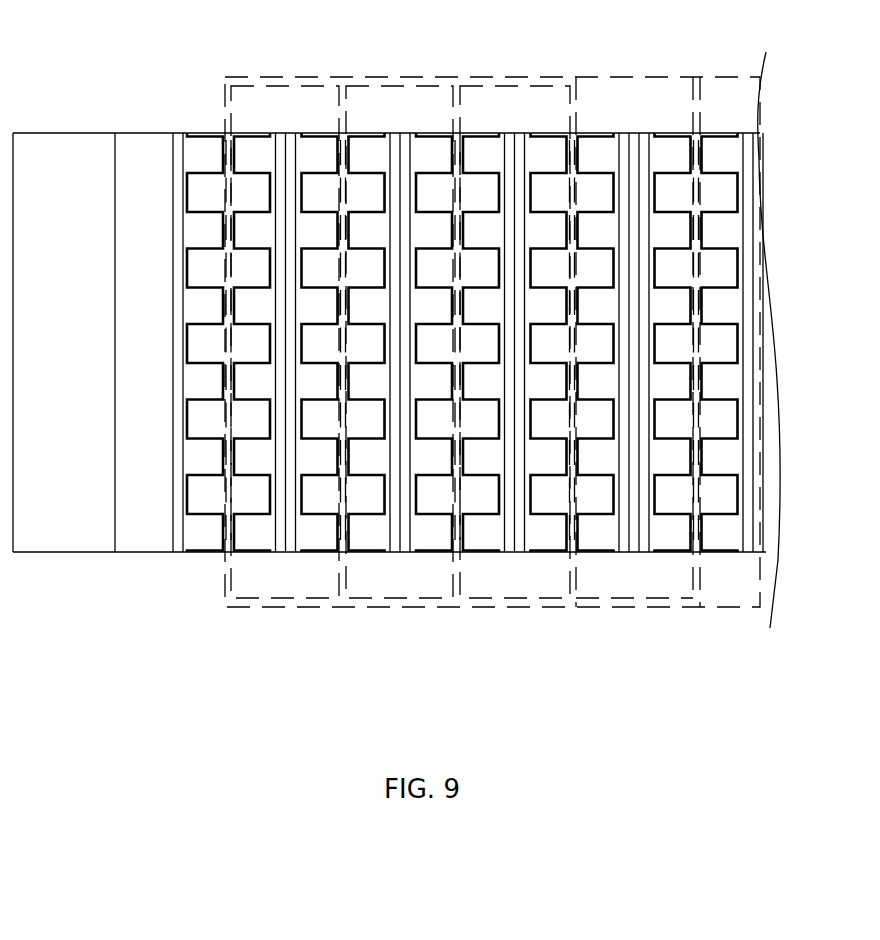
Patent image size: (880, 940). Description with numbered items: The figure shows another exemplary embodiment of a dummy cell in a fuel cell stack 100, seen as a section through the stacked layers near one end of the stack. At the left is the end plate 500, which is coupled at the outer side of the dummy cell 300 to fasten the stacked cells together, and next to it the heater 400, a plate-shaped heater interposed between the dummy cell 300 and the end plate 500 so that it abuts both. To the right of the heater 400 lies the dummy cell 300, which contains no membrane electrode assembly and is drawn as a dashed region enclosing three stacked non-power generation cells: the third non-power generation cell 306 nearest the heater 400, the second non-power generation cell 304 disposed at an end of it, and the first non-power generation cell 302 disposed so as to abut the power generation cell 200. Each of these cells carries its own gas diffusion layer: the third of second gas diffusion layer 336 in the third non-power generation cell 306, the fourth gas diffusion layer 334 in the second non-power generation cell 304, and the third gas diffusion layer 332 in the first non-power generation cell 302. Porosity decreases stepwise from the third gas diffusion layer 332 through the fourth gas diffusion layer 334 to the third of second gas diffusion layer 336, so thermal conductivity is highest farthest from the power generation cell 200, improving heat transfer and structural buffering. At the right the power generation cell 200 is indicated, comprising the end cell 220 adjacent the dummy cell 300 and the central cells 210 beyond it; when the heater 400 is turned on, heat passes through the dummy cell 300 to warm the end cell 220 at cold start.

The fuel cell stack 100 is at (78, 34).
The end plate 500 is at (70, 133).
The heater 400 is at (147, 133).
The dummy cell 300 is at (260, 608).
The third non-power generation cell 306 is at (305, 598).
The second non-power generation cell 304 is at (418, 598).
The first non-power generation cell 302 is at (530, 598).
The third of second gas diffusion layer 336 is at (290, 137).
The fourth gas diffusion layer 334 is at (405, 137).
The third gas diffusion layer 332 is at (519, 137).
The power generation cell 200 is at (690, 423).
The end cell 220 is at (632, 398).
The central cell 210 is at (757, 608).